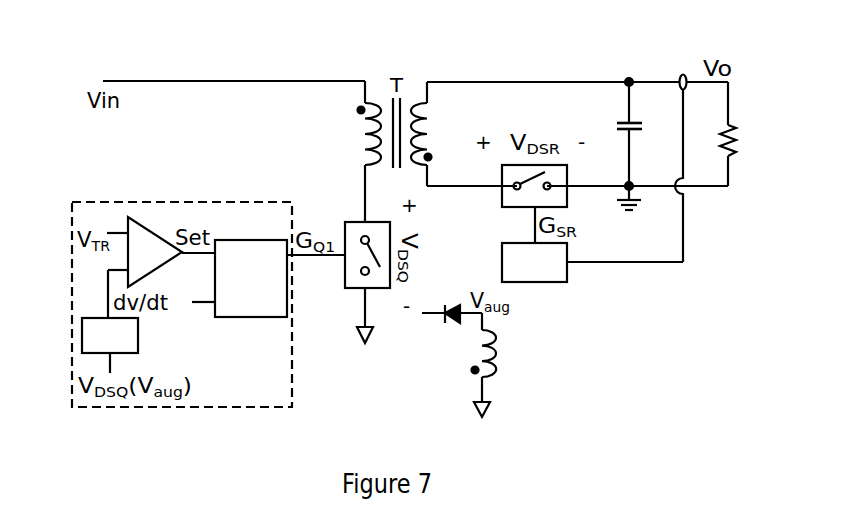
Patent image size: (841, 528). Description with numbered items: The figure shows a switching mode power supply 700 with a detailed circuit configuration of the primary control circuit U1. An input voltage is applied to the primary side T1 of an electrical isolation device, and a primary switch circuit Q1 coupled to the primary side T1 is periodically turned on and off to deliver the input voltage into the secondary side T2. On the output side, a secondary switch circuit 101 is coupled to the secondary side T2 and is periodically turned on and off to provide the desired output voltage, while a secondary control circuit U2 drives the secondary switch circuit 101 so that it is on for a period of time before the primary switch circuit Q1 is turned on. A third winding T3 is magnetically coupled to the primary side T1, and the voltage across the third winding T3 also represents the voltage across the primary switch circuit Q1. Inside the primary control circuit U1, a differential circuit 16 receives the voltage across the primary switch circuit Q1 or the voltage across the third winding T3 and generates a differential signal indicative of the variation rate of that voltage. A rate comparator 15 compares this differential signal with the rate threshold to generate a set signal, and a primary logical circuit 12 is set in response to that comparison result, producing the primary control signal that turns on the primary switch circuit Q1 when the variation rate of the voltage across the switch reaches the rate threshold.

The switching mode power supply 700 is at (122, 58).
The rate comparator 15 is at (144, 252).
The primary logical circuit 12 is at (251, 278).
The differential circuit 16 is at (110, 335).
The secondary switch circuit 101 is at (513, 189).
The primary switch circuit Q1 is at (358, 270).
The primary side T1 is at (352, 134).
The secondary side T2 is at (434, 134).
The third winding T3 is at (472, 353).
The primary control circuit U1 is at (277, 398).
The secondary control circuit U2 is at (534, 262).